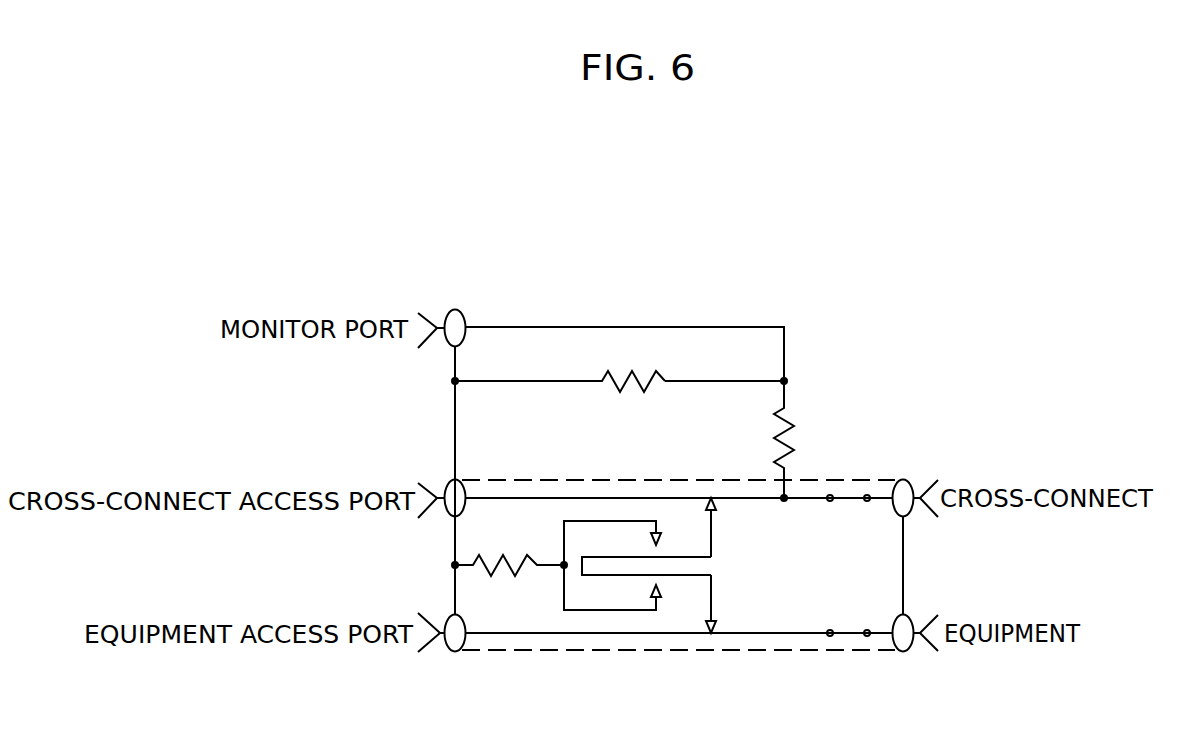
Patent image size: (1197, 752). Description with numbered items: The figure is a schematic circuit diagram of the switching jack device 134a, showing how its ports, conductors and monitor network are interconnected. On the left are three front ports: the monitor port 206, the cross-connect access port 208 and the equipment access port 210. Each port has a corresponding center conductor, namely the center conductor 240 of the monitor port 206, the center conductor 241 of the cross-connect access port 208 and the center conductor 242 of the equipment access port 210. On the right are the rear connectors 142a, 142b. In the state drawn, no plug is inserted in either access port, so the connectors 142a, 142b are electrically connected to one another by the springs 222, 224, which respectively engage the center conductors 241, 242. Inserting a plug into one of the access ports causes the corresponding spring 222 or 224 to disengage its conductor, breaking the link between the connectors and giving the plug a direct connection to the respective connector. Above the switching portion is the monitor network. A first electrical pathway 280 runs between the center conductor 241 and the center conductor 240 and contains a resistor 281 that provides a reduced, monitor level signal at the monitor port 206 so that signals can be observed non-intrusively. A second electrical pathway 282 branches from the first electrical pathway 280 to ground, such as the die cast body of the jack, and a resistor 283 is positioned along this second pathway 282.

The monitor port 206 is at (419, 312).
The cross-connect access port 208 is at (421, 482).
The equipment access port 210 is at (421, 650).
The center conductor 240 is at (598, 327).
The center conductor 241 is at (597, 497).
The center conductor 242 is at (612, 633).
The first electrical pathway 280 is at (805, 353).
The resistor 281 is at (797, 437).
The second electrical pathway 282 is at (693, 381).
The resistor 283 is at (618, 387).
The spring 222 is at (711, 540).
The spring 224 is at (711, 597).
The connector 142a is at (933, 478).
The connector 142b is at (935, 613).
The jack device 134a is at (758, 310).